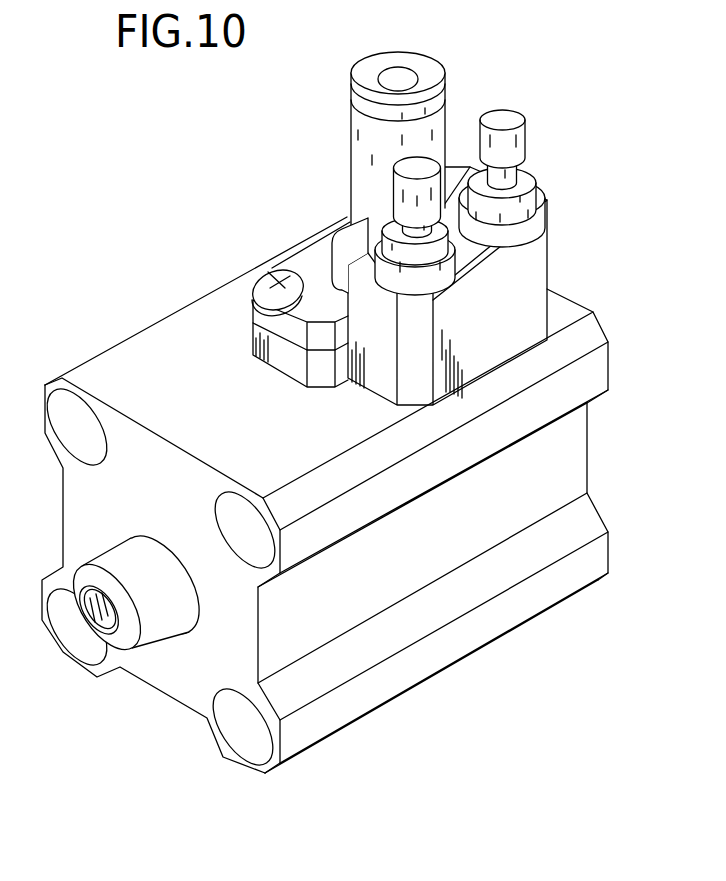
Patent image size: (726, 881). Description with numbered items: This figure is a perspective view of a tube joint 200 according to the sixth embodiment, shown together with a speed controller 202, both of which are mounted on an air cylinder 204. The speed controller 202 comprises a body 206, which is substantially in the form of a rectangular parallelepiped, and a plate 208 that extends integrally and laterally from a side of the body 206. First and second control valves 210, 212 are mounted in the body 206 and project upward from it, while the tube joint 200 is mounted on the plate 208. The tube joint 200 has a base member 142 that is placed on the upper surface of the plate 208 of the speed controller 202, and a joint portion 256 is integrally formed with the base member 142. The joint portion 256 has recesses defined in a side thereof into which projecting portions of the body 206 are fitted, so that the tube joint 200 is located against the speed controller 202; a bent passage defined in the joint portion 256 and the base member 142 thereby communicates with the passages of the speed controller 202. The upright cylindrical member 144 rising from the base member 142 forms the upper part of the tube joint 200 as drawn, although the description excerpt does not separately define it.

The tube joint 200 is at (348, 63).
The solenoid 144 is at (360, 147).
The first control valve 210 is at (437, 157).
The second control valve 212 is at (513, 107).
The speed controller 202 is at (553, 230).
The body 206 is at (522, 274).
The joint portion 256 is at (334, 229).
The base member 142 is at (292, 250).
The plate 208 is at (292, 360).
The air cylinder 204 is at (553, 473).